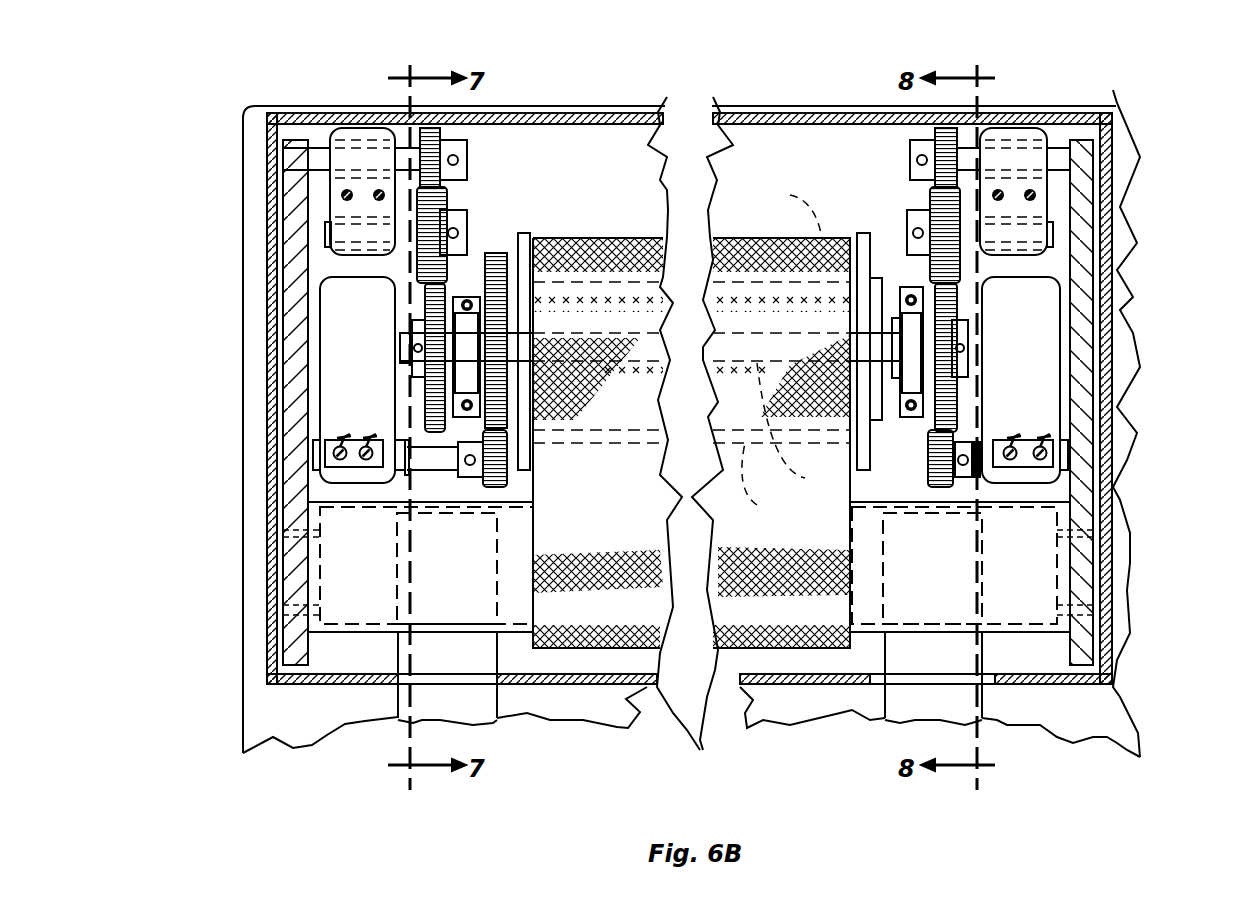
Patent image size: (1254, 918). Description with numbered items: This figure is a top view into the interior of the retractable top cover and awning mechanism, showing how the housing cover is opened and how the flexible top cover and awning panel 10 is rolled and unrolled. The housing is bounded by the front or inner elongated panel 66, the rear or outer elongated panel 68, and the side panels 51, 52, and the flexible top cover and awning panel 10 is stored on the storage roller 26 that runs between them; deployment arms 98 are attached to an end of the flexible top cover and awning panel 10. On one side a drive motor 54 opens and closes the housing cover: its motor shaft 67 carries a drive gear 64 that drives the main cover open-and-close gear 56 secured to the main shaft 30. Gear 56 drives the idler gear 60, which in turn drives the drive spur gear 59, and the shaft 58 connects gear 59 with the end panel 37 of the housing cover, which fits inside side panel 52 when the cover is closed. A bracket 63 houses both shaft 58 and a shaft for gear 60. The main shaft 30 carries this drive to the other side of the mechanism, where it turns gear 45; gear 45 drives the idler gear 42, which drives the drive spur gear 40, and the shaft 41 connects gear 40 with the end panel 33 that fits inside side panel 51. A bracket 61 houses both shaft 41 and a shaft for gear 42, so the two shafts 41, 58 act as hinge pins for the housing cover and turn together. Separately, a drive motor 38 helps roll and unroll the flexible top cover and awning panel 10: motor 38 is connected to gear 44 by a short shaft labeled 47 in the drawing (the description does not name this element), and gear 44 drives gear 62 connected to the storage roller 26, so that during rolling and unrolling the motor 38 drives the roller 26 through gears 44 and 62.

The flexible top cover and awning panel 10 is at (691, 434).
The storage roller 26 is at (782, 354).
The main shaft 30 is at (798, 427).
The end panel 33 is at (292, 378).
The end panel 37 is at (1097, 350).
The drive motor 38 is at (322, 335).
The drive spur gear 40 is at (430, 142).
The shaft 41 is at (295, 157).
The idler gear 42 is at (445, 190).
The gear 44 is at (525, 493).
The gear 45 is at (432, 302).
The drive shaft 47 is at (430, 462).
The side panel 51 is at (290, 282).
The side panel 52 is at (1107, 192).
The drive motor 54 is at (1097, 290).
The main cover open-and-close gear 56 is at (943, 300).
The shaft 58 is at (1115, 107).
The drive spur gear 59 is at (945, 126).
The idler gear 60 is at (930, 200).
The bracket 61 is at (366, 128).
The gear 62 is at (500, 255).
The bracket 63 is at (1015, 128).
The drive gear 64 is at (940, 487).
The inner elongated panel 66 is at (517, 688).
The motor shaft 67 is at (975, 480).
The outer elongated panel 68 is at (828, 118).
The deployment arms 98 is at (398, 700).